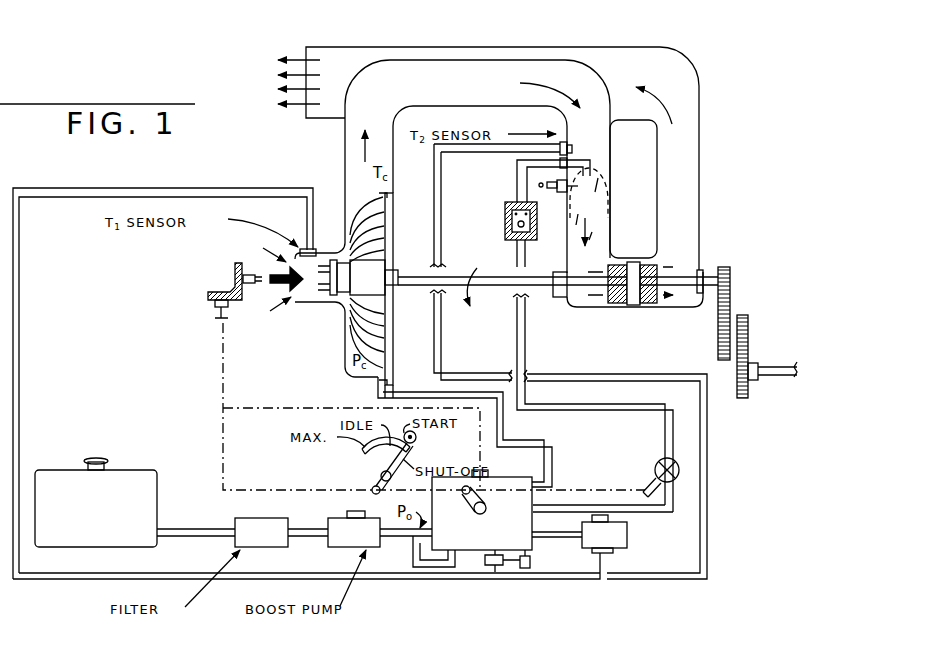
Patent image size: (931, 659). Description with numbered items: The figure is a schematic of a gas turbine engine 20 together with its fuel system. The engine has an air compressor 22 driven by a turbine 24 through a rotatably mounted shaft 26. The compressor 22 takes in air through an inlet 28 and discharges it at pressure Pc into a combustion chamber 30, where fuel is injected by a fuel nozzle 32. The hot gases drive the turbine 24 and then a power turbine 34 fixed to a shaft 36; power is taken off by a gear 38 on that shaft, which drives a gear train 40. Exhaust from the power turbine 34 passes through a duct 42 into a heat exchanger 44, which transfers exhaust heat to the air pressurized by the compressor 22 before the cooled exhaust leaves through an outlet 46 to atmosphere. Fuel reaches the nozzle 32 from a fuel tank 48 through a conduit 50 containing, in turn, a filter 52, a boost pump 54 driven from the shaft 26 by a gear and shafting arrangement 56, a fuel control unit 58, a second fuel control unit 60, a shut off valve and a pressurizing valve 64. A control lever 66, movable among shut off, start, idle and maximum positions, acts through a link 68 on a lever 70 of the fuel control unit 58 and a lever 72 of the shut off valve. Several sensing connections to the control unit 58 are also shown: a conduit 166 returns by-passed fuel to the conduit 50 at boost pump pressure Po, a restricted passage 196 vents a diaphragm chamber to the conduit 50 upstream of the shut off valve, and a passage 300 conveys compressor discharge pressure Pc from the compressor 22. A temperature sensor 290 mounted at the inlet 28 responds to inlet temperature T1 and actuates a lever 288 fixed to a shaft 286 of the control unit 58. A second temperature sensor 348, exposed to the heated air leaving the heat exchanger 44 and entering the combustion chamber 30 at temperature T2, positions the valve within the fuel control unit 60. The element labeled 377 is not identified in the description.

The gas turbine engine 20 is at (336, 324).
The air compressor 22 is at (378, 222).
The turbine 24 is at (619, 265).
The shaft 26 is at (495, 277).
The inlet 28 is at (292, 312).
The combustion chamber 30 is at (603, 207).
The fuel nozzle 32 is at (585, 162).
The power turbine 34 is at (652, 304).
The shaft 36 is at (681, 285).
The gear 38 is at (727, 267).
The gear train 40 is at (752, 316).
The duct 42 is at (702, 150).
The heat exchanger 44 is at (479, 44).
The outlet 46 is at (306, 52).
The fuel tank 48 is at (130, 488).
The conduit 50 is at (210, 537).
The filter 52 is at (243, 525).
The boost pump 54 is at (342, 525).
The gear and shafting arrangement 56 is at (227, 281).
The fuel control unit 58 is at (465, 553).
The fuel control unit 60 is at (622, 556).
The pressurizing valve 64 is at (506, 215).
The control lever 66 is at (387, 458).
The link 68 is at (600, 470).
The lever 70 is at (465, 498).
The lever 72 is at (650, 492).
The conduit 166 is at (431, 570).
The restricted passage 196 is at (568, 506).
The shaft 286 is at (494, 573).
The lever 288 is at (513, 572).
The temperature sensor 290 is at (313, 250).
The passage 300 is at (378, 393).
The temperature sensor 348 is at (572, 140).
The igniter 377 is at (539, 185).